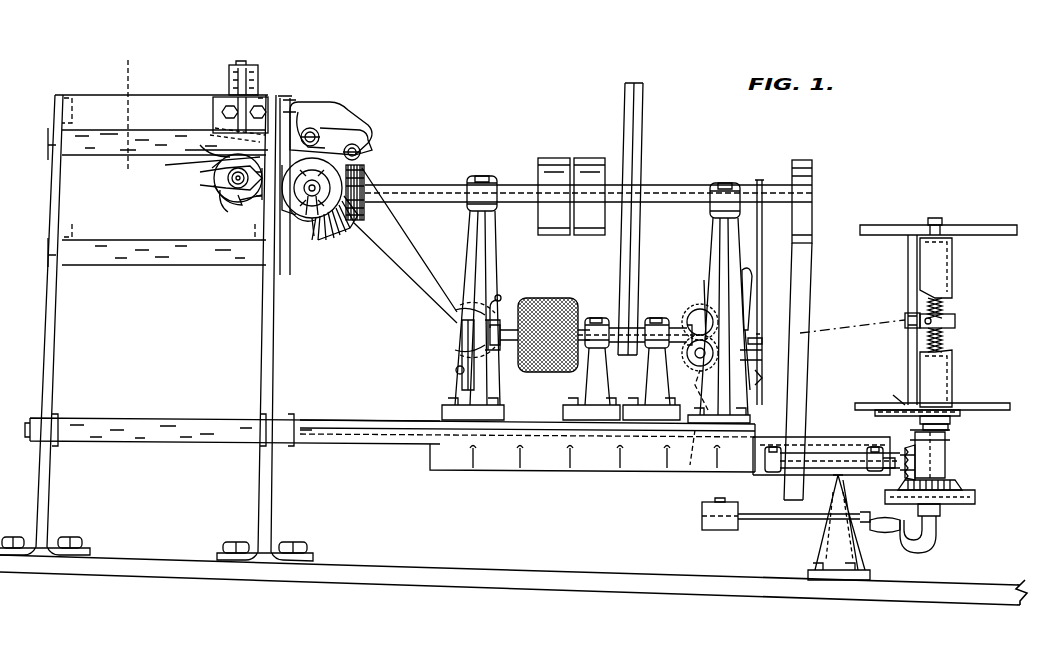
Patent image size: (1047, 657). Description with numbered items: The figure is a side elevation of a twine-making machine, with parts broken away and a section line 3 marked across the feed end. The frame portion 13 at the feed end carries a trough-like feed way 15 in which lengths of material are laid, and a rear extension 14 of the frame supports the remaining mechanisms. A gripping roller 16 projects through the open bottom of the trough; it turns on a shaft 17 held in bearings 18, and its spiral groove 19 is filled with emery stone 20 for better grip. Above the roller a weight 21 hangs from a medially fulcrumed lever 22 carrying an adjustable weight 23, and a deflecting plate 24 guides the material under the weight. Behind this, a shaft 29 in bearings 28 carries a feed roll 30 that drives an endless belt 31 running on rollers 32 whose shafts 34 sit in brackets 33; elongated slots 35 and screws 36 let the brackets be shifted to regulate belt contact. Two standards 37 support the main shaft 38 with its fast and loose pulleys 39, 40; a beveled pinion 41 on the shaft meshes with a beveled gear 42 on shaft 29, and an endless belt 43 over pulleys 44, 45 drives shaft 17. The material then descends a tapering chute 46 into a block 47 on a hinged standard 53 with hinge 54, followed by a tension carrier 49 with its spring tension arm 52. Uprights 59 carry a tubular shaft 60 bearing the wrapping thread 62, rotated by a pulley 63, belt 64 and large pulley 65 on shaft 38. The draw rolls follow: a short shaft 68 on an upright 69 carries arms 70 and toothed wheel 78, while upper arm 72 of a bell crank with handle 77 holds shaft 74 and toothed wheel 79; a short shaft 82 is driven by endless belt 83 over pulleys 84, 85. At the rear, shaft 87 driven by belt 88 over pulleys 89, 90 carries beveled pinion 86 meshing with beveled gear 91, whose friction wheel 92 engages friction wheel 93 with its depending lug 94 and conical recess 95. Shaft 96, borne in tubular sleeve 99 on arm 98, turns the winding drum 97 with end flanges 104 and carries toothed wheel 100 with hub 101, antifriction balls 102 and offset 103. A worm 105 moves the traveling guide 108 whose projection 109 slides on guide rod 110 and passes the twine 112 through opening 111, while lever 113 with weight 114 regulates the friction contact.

The section line 3 is at (128, 123).
The frame portion 13 is at (220, 310).
The rear extension 14 is at (423, 440).
The feed way 15 is at (182, 162).
The gripping roller 16 is at (230, 200).
The shaft 17 is at (218, 176).
The bearings 18 is at (252, 198).
The spiral groove 19 is at (222, 199).
The emery stone 20 is at (214, 190).
The weight 21 is at (222, 128).
The lever 22 is at (256, 70).
The adjustable weight 23 is at (244, 64).
The deflecting plate 24 is at (210, 130).
The bearings 28 is at (286, 212).
The shaft 29 is at (316, 200).
The feed roll 30 is at (300, 222).
The endless belt 31 is at (335, 130).
The rollers 32 is at (360, 150).
The brackets 33 is at (300, 105).
The shafts 34 is at (356, 145).
The elongated slots 35 is at (286, 98).
The screws 36 is at (282, 112).
The standards 37 is at (712, 270).
The shaft 38 is at (672, 184).
The fast pulley 39 is at (550, 158).
The loose pulley 40 is at (589, 158).
The beveled pinion 41 is at (364, 212).
The beveled gear 42 is at (342, 235).
The endless belt 43 is at (262, 196).
The pulley 44 is at (312, 232).
The pulley 45 is at (200, 155).
The chute 46 is at (400, 295).
The block 47 is at (452, 300).
The tension carrier 49 is at (495, 352).
The spring tension arm 52 is at (508, 300).
The standard 53 is at (458, 365).
The hinge 54 is at (455, 372).
The uprights 59 is at (600, 382).
The tubular shaft 60 is at (645, 318).
The wrapping thread 62 is at (548, 300).
The pulley 63 is at (618, 318).
The belt 64 is at (661, 233).
The large pulley 65 is at (642, 140).
The short shaft 68 is at (692, 388).
The upright 69 is at (693, 447).
The arms 70 is at (762, 341).
The upper arm 72 is at (756, 310).
The shaft 74 is at (704, 285).
The handle 77 is at (752, 278).
The toothed wheel 78 is at (688, 362).
The toothed wheel 79 is at (696, 312).
The short shaft 82 is at (763, 362).
The endless belt 83 is at (763, 240).
The pulley 84 is at (760, 380).
The pulley 85 is at (764, 186).
The beveled pinion 86 is at (922, 426).
The shaft 87 is at (822, 474).
The endless belt 88 is at (806, 380).
The pulley 89 is at (770, 475).
The pulley 90 is at (812, 176).
The beveled gear 91 is at (962, 486).
The friction wheel 92 is at (975, 497).
The friction wheel 93 is at (942, 512).
The depending lug 94 is at (940, 534).
The conical recess 95 is at (905, 515).
The shaft 96 is at (946, 462).
The winding drum 97 is at (953, 366).
The arm 98 is at (870, 446).
The tubular sleeve 99 is at (946, 445).
The toothed wheel 100 is at (1000, 406).
The depending hub 101 is at (960, 414).
The antifriction balls 102 is at (918, 420).
The offset 103 is at (897, 398).
The end flanges 104 is at (985, 405).
The worm 105 is at (950, 312).
The traveling guide 108 is at (945, 348).
The projection 109 is at (905, 314).
The guide rod 110 is at (908, 272).
The opening 111 is at (955, 325).
The twine 112 is at (850, 335).
The lever 113 is at (766, 522).
The weight 114 is at (702, 528).